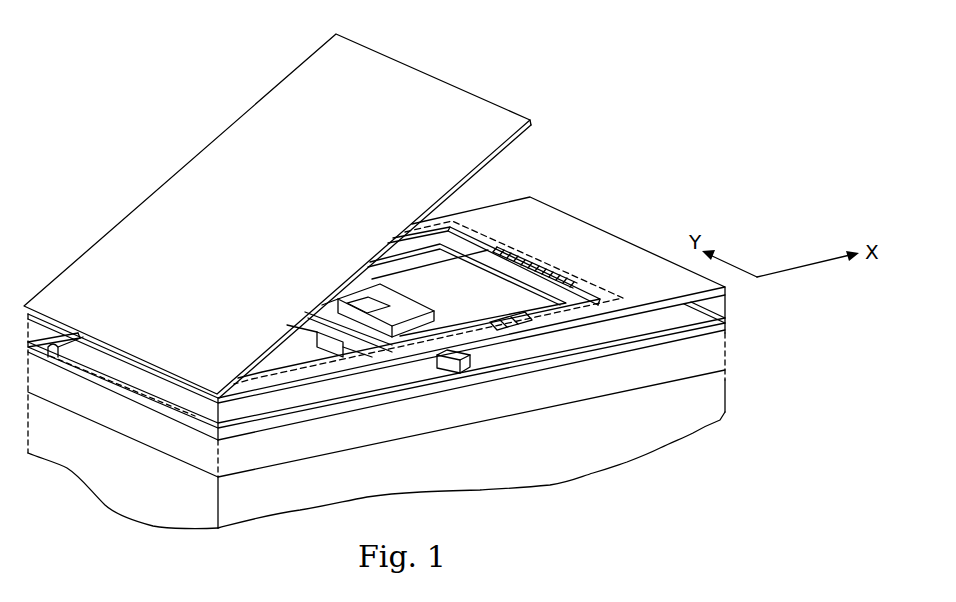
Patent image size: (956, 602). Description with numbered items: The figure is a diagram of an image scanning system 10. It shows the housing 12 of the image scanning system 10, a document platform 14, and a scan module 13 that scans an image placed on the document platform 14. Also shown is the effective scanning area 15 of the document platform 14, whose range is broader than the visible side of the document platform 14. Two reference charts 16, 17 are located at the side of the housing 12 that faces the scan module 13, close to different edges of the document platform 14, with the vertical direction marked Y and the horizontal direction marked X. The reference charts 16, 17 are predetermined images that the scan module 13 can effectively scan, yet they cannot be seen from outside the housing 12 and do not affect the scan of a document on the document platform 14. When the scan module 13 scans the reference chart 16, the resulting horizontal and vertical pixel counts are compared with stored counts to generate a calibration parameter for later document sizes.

The image scanning system 10 is at (609, 88).
The housing 12 is at (729, 385).
The scan module 13 is at (437, 360).
The document platform 14 is at (520, 306).
The effective scanning area 15 is at (314, 370).
The reference chart 16 is at (510, 322).
The reference chart 17 is at (528, 258).